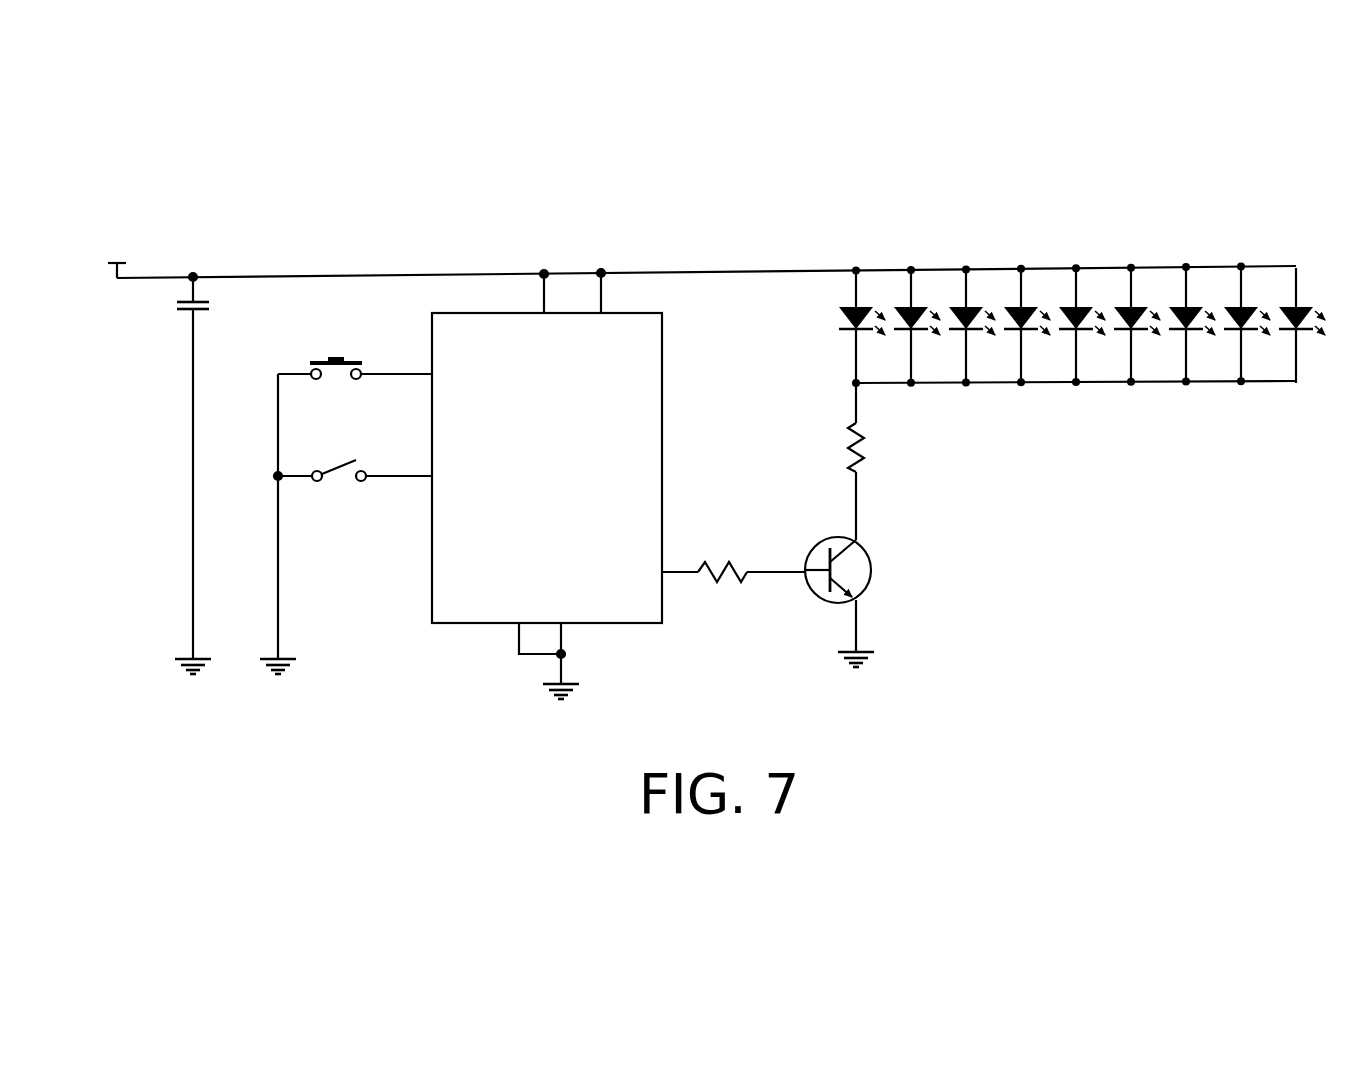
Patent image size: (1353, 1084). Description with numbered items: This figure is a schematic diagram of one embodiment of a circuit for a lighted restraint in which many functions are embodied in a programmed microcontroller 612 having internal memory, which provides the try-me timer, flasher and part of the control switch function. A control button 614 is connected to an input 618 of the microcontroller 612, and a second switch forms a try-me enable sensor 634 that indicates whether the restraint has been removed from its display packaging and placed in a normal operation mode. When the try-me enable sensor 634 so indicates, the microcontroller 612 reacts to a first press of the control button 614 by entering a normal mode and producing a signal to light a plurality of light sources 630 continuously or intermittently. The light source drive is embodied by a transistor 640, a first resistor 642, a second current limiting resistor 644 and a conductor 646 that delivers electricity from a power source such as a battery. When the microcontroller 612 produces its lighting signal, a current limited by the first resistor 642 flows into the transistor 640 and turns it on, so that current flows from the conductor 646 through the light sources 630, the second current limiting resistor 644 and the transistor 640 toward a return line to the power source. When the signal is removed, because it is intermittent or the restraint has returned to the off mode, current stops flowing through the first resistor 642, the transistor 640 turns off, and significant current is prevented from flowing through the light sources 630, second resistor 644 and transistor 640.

The microcontroller 612 is at (547, 484).
The control button 614 is at (357, 353).
The input 618 is at (398, 372).
The light sources 630 is at (1163, 392).
The try-me enable sensor 634 is at (346, 482).
The transistor 640 is at (872, 575).
The first resistor 642 is at (716, 577).
The second current limiting resistor 644 is at (862, 440).
The conductor 646 is at (800, 270).